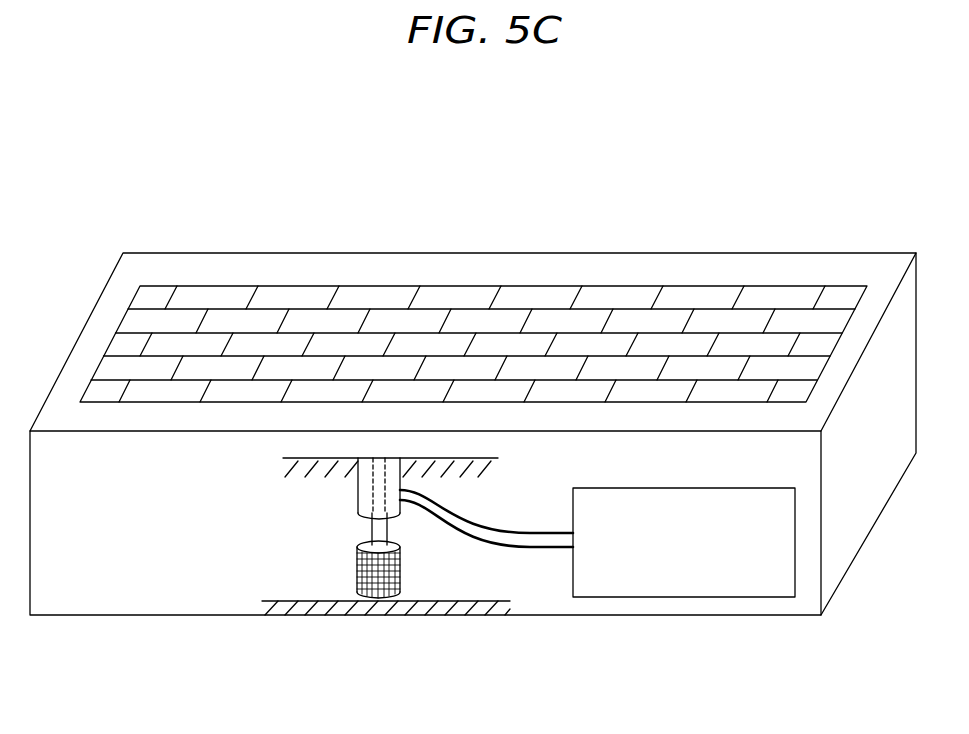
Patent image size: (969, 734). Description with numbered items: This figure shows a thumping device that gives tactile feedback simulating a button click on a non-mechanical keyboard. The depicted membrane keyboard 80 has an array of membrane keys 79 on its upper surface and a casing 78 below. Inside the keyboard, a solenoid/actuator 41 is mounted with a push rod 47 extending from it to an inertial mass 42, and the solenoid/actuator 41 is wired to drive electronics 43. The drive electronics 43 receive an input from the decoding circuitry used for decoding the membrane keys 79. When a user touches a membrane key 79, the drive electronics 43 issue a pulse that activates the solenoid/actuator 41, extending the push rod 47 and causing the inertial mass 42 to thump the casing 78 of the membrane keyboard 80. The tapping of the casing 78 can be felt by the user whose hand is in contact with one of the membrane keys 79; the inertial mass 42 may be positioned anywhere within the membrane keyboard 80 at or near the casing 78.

The membrane keyboard 80 is at (519, 252).
The membrane keys 79 is at (148, 342).
The solenoid/actuator 41 is at (358, 492).
The push rod 47 is at (372, 530).
The inertial mass 42 is at (358, 572).
The drive electronics 43 is at (766, 588).
The casing 78 is at (443, 609).